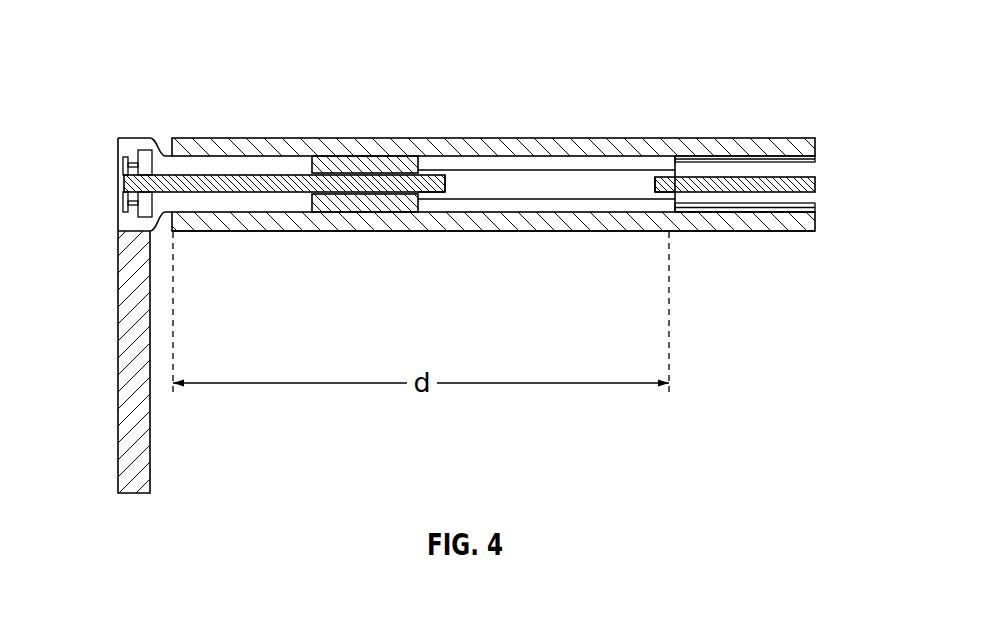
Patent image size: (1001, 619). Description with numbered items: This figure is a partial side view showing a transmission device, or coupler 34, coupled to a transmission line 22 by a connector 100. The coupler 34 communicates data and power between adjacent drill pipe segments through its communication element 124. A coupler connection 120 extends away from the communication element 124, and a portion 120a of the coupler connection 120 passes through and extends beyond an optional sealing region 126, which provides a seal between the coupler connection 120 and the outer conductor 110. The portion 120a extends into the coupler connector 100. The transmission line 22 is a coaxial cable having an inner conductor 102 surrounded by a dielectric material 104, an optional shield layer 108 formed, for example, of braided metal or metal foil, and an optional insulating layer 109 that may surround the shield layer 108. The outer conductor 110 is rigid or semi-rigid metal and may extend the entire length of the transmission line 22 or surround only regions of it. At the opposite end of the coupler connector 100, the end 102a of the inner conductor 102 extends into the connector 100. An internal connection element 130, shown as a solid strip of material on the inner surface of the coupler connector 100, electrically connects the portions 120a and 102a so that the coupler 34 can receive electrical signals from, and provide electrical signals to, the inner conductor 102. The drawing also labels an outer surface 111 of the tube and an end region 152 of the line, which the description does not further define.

The transmission device 34 is at (149, 43).
The connector 100 is at (534, 186).
The outer conductor 110 is at (476, 150).
The outer surface of tube 111 is at (247, 232).
The coupler connection 120 is at (218, 172).
The portion of the coupler connection 120a is at (428, 193).
The communication element 124 is at (123, 202).
The sealing region 126 is at (368, 163).
The internal connection element 130 is at (510, 199).
The tube end portion 152 is at (652, 150).
The transmission line 22 is at (776, 186).
The inner conductor 102 is at (815, 183).
The end of the inner conductor 102a is at (688, 192).
The dielectric material 104 is at (815, 160).
The shield layer 108 is at (815, 205).
The insulating layer 109 is at (783, 211).